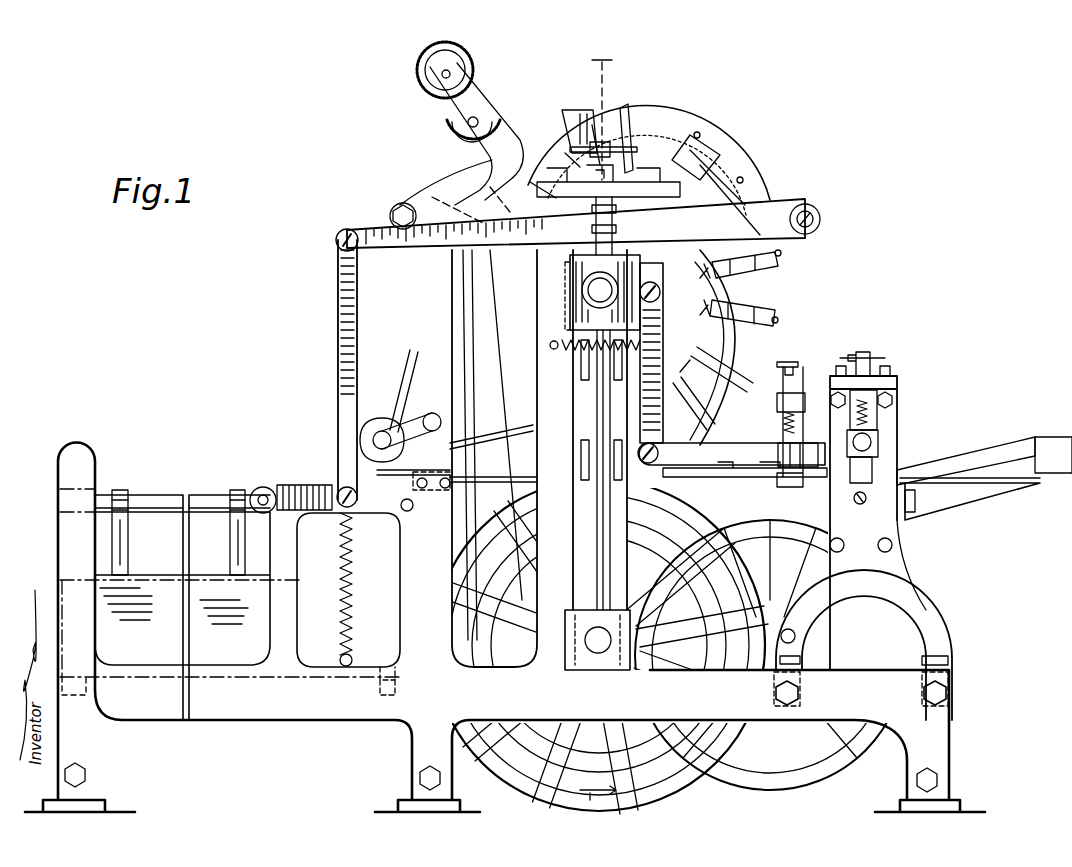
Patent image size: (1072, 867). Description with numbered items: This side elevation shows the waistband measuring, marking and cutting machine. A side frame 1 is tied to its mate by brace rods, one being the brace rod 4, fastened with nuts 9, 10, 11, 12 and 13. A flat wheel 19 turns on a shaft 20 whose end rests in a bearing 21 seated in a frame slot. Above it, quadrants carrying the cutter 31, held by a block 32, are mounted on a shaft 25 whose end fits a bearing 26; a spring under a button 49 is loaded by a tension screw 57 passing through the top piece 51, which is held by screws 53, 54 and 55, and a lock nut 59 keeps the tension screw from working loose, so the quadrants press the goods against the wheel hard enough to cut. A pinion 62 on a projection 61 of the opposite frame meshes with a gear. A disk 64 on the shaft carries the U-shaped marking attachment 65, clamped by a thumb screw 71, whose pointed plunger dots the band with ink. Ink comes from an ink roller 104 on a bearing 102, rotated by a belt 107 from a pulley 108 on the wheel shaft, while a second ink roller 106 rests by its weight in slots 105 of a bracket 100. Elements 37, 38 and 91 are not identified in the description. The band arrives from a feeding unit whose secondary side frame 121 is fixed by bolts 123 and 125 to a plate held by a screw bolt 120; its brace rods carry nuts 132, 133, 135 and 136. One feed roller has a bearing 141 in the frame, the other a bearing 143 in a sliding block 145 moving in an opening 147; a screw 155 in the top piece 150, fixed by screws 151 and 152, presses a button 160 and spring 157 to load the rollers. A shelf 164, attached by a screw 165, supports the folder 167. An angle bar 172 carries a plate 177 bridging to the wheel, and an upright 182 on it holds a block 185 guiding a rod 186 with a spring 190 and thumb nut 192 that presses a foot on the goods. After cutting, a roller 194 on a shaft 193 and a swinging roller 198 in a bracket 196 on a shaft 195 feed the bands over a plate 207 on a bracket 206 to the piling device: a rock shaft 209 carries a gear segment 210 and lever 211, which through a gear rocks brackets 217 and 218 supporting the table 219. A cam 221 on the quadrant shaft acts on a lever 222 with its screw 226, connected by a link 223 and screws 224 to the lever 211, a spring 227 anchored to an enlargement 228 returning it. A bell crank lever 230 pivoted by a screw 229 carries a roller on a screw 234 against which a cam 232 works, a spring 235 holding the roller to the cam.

The side frame 1 is at (310, 710).
The brace rod 4 is at (595, 424).
The nut 9 is at (937, 780).
The nut 10 is at (420, 776).
The nut 11 is at (87, 774).
The nut 12 is at (90, 455).
The nut 13 is at (391, 210).
The flat wheel 19 is at (770, 655).
The shaft 20 is at (598, 644).
The bearing 21 is at (610, 668).
The shaft 25 is at (605, 292).
The bearing 26 is at (653, 274).
The cutter 31 is at (580, 108).
The block 32 is at (612, 110).
The spoke 37 is at (556, 770).
The spoke 38 is at (599, 740).
The button 49 is at (590, 226).
The top piece 51 is at (722, 178).
The screw 53 is at (690, 140).
The screw 54 is at (548, 178).
The screw 55 is at (714, 399).
The tension screw 57 is at (640, 128).
The lock nut 59 is at (575, 200).
The projection 61 is at (802, 648).
The pinion 62 is at (846, 768).
The disk 64 is at (520, 380).
The U shaped piece 65 is at (700, 140).
The thumb screw 71 is at (715, 347).
The rod 91 is at (606, 565).
The bracket 100 is at (445, 178).
The bearing 102 is at (468, 122).
The ink roller 104 is at (490, 100).
The slot 105 is at (433, 55).
The ink roller 106 is at (470, 66).
The belt 107 is at (508, 130).
The pulley 108 is at (520, 645).
The screw bolt 120 is at (776, 693).
The secondary side frame 121 is at (935, 588).
The bolt 123 is at (922, 656).
The bolt 125 is at (806, 658).
The nut 132 is at (893, 544).
The nut 133 is at (878, 400).
The nut 135 is at (790, 370).
The nut 136 is at (833, 540).
The bearing 141 is at (904, 522).
The bearing 143 is at (880, 435).
The sliding block 145 is at (930, 460).
The opening 147 is at (874, 465).
The top piece 150 is at (890, 380).
The screw 151 is at (886, 368).
The screw 152 is at (840, 366).
The screw 155 is at (866, 352).
The spring 157 is at (892, 410).
The button 160 is at (872, 366).
The shelf 164 is at (978, 496).
The screw 165 is at (915, 500).
The folder 167 is at (1000, 456).
The angle bar 172 is at (810, 480).
The plate 177 is at (745, 482).
The upright 182 is at (800, 445).
The block 185 is at (806, 400).
The rod 186 is at (777, 400).
The spring 190 is at (783, 425).
The thumb nut 192 is at (794, 354).
The shaft 193 is at (412, 510).
The roller 194 is at (390, 623).
The shaft 195 is at (436, 414).
The bracket 196 is at (398, 420).
The roller 198 is at (362, 432).
The bracket 206 is at (452, 488).
The plate 207 is at (498, 470).
The rock shaft 209 is at (262, 488).
The gear segment 210 is at (283, 474).
The lever 211 is at (338, 518).
The bracket 217 is at (128, 495).
The bracket 218 is at (236, 495).
The table 219 is at (182, 607).
The cam 221 is at (572, 270).
The lever 222 is at (558, 433).
The link 223 is at (338, 285).
The screw 224 is at (336, 240).
The screw 226 is at (614, 230).
The spring 227 is at (342, 600).
The enlargement 228 is at (352, 660).
The screw 229 is at (652, 468).
The bell crank lever 230 is at (710, 305).
The cam 232 is at (575, 312).
The screw 234 is at (712, 268).
The spring 235 is at (578, 370).